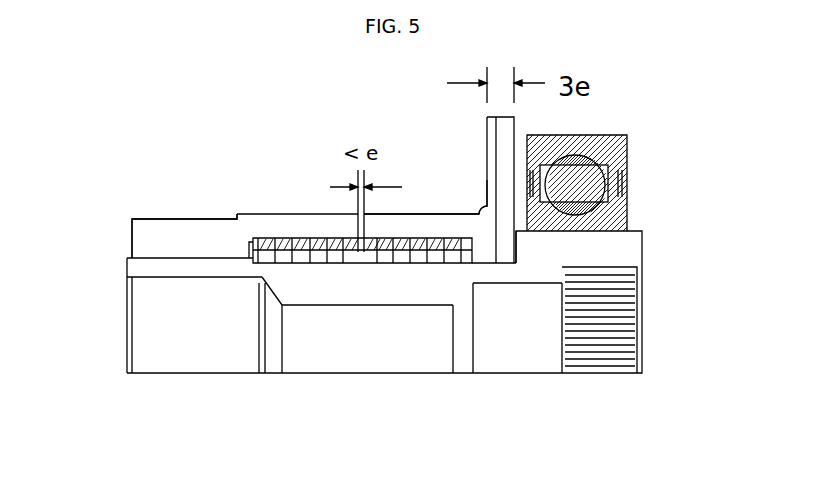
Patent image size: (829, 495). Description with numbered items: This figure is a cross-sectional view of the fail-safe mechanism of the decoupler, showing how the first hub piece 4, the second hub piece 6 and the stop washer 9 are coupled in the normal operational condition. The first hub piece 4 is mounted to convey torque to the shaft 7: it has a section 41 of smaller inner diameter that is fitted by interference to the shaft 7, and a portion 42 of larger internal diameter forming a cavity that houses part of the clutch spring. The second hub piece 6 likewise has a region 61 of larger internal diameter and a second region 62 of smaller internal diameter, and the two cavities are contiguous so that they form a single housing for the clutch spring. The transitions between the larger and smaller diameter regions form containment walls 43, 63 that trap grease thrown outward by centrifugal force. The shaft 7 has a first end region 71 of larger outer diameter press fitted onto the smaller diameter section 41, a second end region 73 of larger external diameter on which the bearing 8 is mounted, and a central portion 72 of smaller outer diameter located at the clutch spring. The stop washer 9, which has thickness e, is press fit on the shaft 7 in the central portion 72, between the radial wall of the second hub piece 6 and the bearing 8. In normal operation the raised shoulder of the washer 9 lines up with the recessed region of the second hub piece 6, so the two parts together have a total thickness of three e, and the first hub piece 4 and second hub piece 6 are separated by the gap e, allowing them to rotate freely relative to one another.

The first hub piece 4 is at (145, 234).
The section with smaller inner diameter 41 is at (170, 233).
The portion with larger internal diameter 42 is at (290, 223).
The containment wall 43 is at (253, 250).
The second hub piece 6 is at (422, 222).
The region of larger internal diameter 61 is at (453, 215).
The second region of smaller internal diameter 62 is at (481, 238).
The containment wall 63 is at (527, 243).
The shaft 7 is at (608, 252).
The first end region 71 is at (187, 268).
The central portion 72 is at (377, 287).
The second end region 73 is at (563, 250).
The bearing 8 is at (610, 147).
The stop washer 9 is at (508, 125).